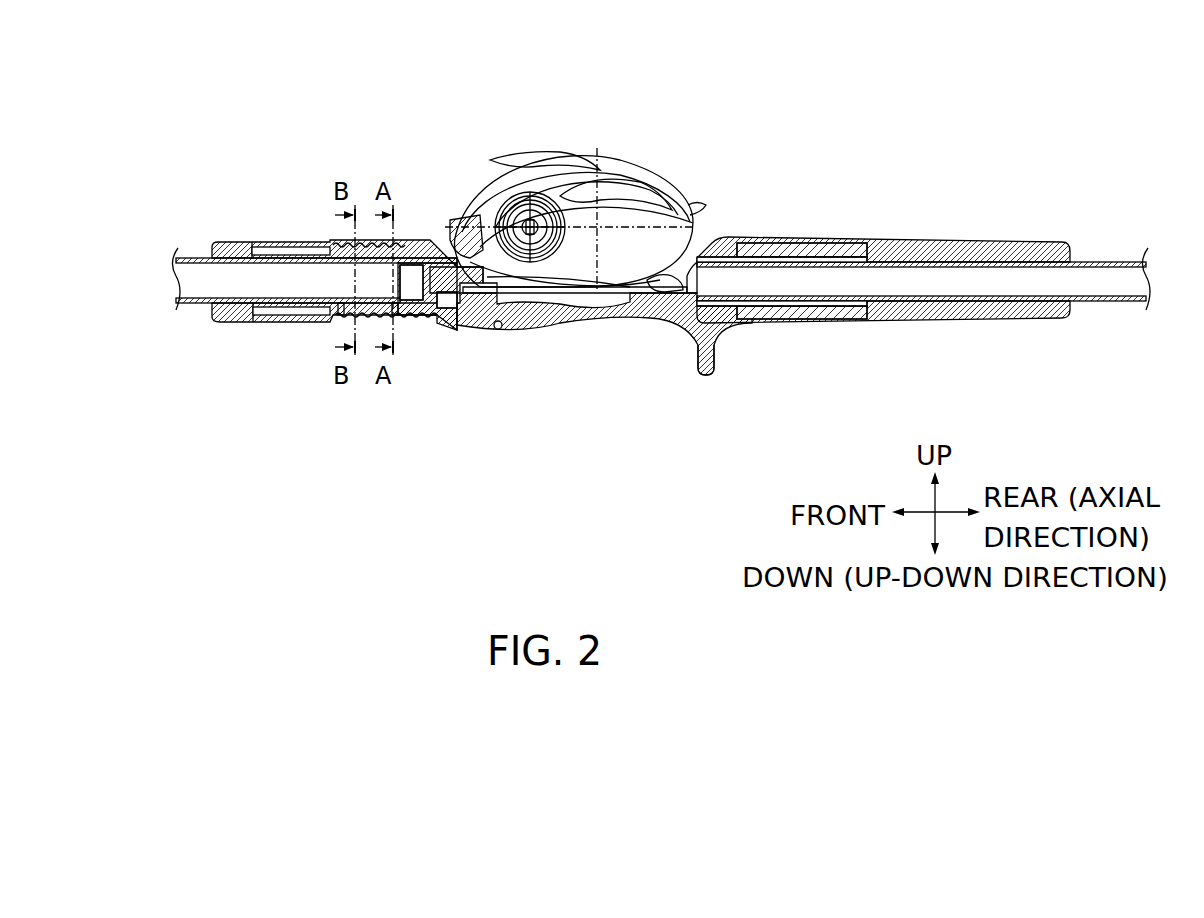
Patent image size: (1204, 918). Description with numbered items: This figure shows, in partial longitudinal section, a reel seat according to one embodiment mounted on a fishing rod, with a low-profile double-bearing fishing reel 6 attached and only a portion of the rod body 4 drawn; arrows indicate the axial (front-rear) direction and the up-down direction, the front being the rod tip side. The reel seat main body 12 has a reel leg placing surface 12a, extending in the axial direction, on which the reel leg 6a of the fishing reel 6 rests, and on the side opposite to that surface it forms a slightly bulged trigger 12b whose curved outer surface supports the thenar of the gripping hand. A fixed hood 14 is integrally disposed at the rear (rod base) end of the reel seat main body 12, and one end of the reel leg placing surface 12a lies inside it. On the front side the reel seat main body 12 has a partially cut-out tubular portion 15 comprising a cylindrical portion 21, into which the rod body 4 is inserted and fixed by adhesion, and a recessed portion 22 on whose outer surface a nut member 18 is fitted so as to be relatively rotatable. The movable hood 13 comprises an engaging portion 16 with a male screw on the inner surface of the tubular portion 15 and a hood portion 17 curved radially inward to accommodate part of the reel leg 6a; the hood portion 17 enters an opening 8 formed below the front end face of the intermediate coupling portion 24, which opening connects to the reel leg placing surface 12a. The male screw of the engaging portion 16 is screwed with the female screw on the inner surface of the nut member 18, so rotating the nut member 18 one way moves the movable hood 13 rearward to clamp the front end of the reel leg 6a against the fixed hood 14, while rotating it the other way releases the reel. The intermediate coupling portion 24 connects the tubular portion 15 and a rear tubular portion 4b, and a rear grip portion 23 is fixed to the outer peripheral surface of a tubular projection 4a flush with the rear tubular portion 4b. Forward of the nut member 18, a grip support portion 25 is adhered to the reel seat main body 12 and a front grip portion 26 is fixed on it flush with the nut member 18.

The rod body 4 is at (661, 279).
The tubular projection 4a is at (840, 306).
The rear tubular portion 4b is at (743, 242).
The fishing reel 6 is at (628, 178).
The reel leg 6a is at (684, 262).
The opening 8 is at (452, 264).
The reel seat main body 12 is at (553, 368).
The reel leg placing surface 12a is at (652, 292).
The trigger 12b is at (710, 376).
The movable hood 13 is at (470, 266).
The fixed hood 14 is at (695, 258).
The tubular portion 15 is at (412, 118).
The engaging portion 16 is at (413, 318).
The hood portion 17 is at (455, 293).
The nut member 18 is at (333, 242).
The cylindrical portion 21 is at (408, 258).
The recessed portion 22 is at (361, 258).
The grip portion (rear grip) 23 is at (833, 250).
The intermediate coupling portion 24 is at (498, 330).
The grip support portion 25 is at (246, 242).
The grip portion (front grip) 26 is at (288, 242).